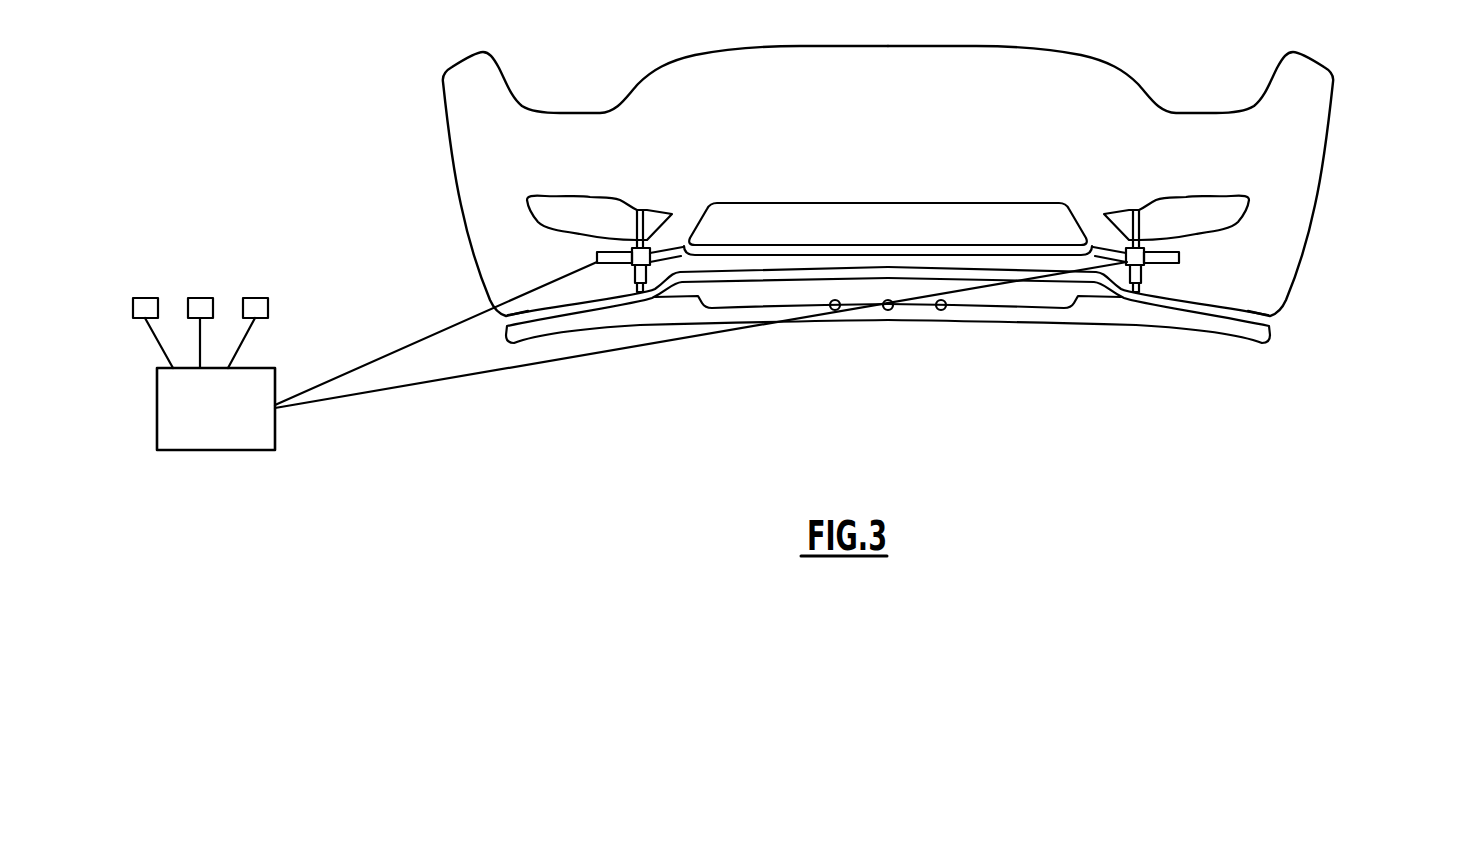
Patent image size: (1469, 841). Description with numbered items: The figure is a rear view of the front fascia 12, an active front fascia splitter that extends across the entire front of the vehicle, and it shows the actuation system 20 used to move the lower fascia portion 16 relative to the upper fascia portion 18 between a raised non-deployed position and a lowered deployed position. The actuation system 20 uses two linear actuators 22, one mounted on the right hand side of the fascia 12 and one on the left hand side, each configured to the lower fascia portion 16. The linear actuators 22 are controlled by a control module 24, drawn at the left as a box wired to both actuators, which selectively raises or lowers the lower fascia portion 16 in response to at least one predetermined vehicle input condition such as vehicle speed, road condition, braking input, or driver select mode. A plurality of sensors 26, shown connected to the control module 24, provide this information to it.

The front fascia 12 is at (1376, 51).
The lower fascia portion 16 is at (1227, 330).
The upper fascia portion 18 is at (1270, 290).
The actuation system 20 is at (630, 300).
The linear actuators 22 is at (630, 288).
The control module 24 is at (231, 424).
The sensors 26 is at (248, 298).